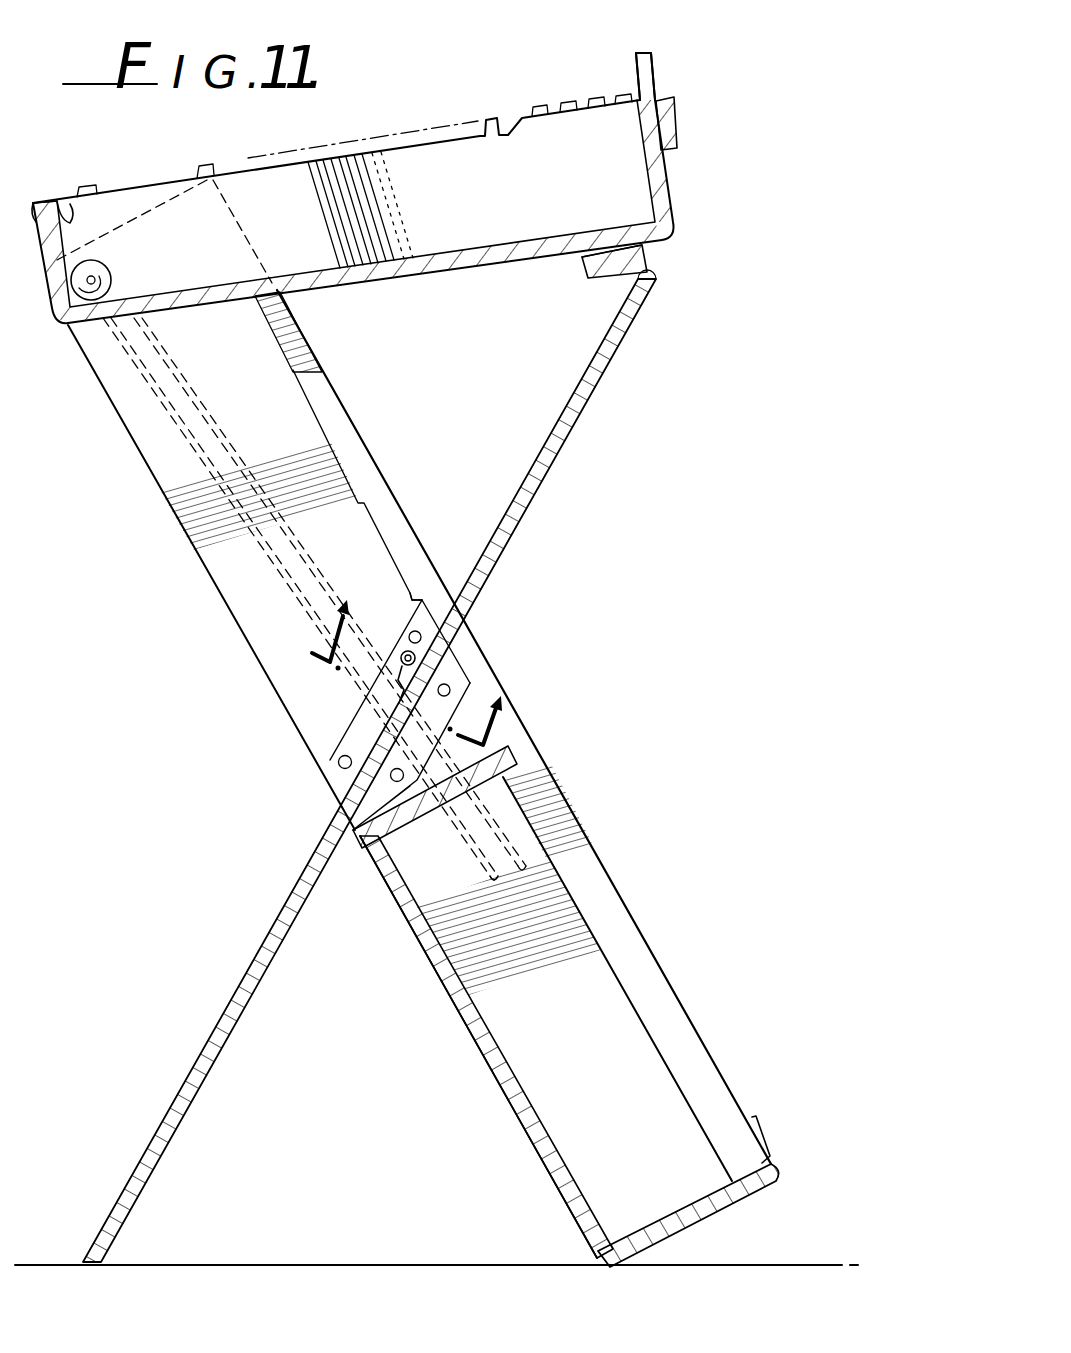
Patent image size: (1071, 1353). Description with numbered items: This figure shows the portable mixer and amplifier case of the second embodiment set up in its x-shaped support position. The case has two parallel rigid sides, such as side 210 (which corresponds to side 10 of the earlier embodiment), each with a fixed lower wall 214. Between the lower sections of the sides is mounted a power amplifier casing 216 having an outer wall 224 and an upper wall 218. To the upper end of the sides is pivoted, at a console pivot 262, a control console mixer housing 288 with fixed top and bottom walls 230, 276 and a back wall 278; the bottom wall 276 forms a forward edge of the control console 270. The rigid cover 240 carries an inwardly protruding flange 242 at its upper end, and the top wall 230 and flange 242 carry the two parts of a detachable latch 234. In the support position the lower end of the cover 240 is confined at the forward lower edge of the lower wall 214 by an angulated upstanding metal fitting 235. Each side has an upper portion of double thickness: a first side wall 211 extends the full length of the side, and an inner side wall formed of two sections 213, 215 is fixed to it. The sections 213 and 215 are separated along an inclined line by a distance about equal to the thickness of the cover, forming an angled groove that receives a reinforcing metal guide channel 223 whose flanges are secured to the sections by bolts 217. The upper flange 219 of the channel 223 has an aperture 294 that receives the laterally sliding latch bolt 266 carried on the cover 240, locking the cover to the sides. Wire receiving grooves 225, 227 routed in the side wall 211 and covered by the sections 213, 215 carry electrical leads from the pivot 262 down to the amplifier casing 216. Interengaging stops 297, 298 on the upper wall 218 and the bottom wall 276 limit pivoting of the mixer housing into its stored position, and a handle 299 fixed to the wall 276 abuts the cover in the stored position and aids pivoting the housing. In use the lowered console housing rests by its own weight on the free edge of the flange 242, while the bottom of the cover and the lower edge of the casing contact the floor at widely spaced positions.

The side 10 is at (418, 672).
The side 210 is at (459, 778).
The first side wall 211 is at (357, 426).
The side section 213 is at (238, 640).
The lower wall 214 is at (692, 1212).
The side section 215 is at (432, 942).
The power amplifier casing 216 is at (560, 1132).
The bolt 217 is at (453, 580).
The upper wall 218 is at (413, 850).
The upper flange 219 is at (345, 750).
The reinforcing metal guide channel 223 is at (340, 716).
The outer wall 224 is at (480, 1068).
The wire receiving groove 225 is at (213, 413).
The wire receiving groove 227 is at (190, 452).
The top wall 230 is at (62, 200).
The detachable latch 234 is at (660, 255).
The angulated upstanding metal fitting 235 is at (770, 1120).
The rigid cover 240 is at (250, 1036).
The inwardly protruding flange 242 is at (598, 272).
The console pivot 262 is at (110, 272).
The latch bolt 266 is at (415, 666).
The control console 270 is at (470, 117).
The bottom wall 276 is at (668, 182).
The back wall 278 is at (381, 282).
The control console mixer housing 288 is at (513, 201).
The aperture 294 is at (418, 656).
The stop 297 is at (377, 872).
The stop 298 is at (678, 125).
The handle 299 is at (650, 75).